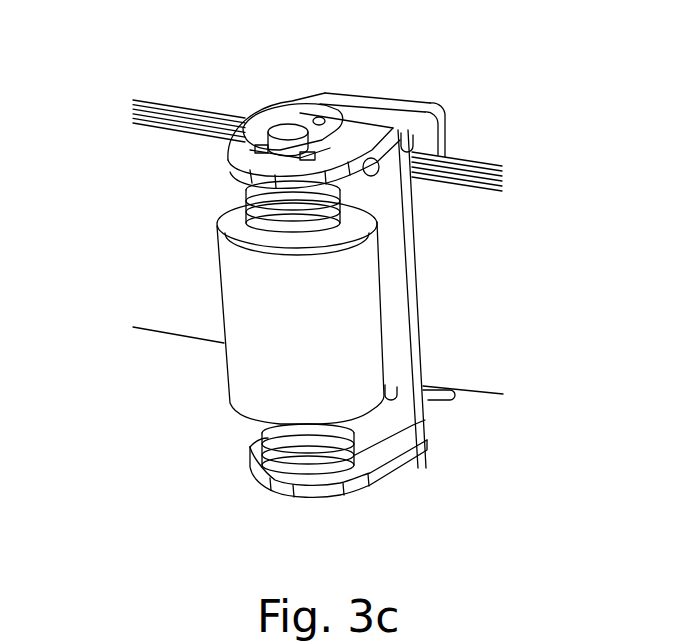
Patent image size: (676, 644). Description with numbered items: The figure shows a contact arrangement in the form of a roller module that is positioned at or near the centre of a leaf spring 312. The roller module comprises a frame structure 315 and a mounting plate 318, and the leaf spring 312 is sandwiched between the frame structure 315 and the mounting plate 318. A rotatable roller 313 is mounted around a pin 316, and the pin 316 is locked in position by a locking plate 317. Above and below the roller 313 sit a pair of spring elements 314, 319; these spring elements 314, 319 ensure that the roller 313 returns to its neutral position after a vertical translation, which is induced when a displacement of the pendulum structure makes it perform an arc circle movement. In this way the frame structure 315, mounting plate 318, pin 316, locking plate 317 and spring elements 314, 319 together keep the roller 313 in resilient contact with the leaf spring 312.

The leaf spring 312 is at (480, 236).
The rotatable roller 313 is at (243, 358).
The spring element 314 is at (358, 475).
The frame structure 315 is at (362, 137).
The pin 316 is at (281, 127).
The locking plate 317 is at (292, 126).
The mounting plate 318 is at (441, 112).
The spring element 319 is at (245, 200).